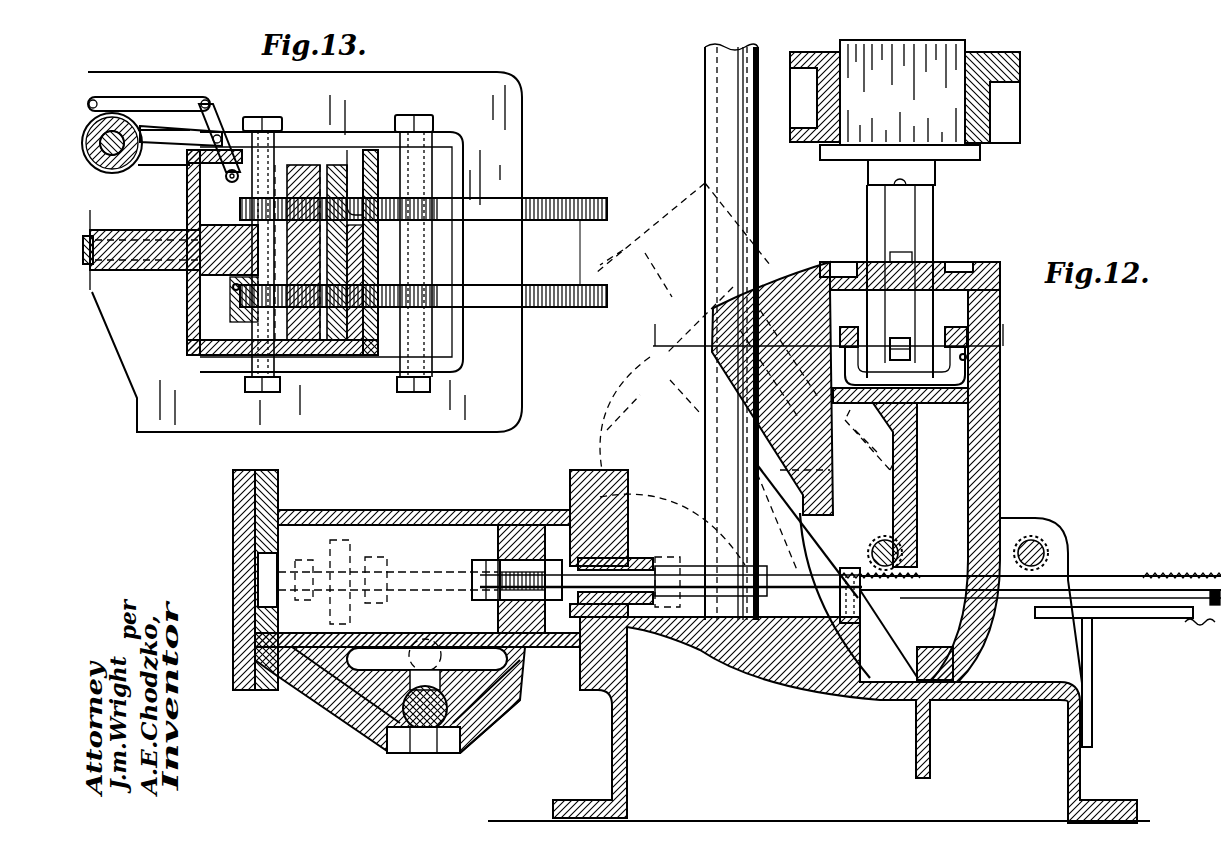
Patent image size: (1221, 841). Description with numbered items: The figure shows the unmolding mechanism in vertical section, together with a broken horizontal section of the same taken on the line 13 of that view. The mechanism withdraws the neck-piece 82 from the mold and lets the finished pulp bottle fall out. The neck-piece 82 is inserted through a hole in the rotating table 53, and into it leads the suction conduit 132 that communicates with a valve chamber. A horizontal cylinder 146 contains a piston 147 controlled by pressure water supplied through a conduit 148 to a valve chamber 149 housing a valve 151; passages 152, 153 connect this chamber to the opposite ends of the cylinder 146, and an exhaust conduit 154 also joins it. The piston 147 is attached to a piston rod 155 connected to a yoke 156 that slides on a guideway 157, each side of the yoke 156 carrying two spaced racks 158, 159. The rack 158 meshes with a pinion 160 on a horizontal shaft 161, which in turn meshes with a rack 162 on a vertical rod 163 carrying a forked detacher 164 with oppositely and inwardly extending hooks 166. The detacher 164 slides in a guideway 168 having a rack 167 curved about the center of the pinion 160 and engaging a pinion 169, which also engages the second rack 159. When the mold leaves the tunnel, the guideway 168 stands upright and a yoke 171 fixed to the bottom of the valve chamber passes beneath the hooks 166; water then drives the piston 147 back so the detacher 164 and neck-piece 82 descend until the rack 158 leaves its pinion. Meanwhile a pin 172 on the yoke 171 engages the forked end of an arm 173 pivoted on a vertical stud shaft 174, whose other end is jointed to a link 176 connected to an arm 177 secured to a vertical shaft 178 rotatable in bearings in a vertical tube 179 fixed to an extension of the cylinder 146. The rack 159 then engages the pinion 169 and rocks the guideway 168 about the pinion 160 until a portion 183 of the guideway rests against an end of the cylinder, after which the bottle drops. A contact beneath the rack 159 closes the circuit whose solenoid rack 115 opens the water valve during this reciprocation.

In FIG. 12, the section line 13- 13 is at (824, 336).
In FIG. 12, the table 53 is at (1015, 56).
In FIG. 12, the neck-piece 82 is at (902, 92).
In FIG. 12, the rack 115 is at (1155, 620).
In FIG. 12, the suction conduit 132 is at (900, 281).
In FIG. 12, the horizontal cylinder 146 is at (406, 580).
In FIG. 12, the piston 147 is at (498, 550).
In FIG. 12, the conduit 148 is at (438, 664).
In FIG. 12, the valve chamber 149 is at (462, 737).
In FIG. 12, the valve 151 is at (392, 737).
In FIG. 12, the passage 152 is at (523, 677).
In FIG. 12, the passage 153 is at (332, 680).
In FIG. 12, the exhaust conduit 154 is at (425, 753).
In FIG. 12, the piston rod 155 is at (671, 568).
In FIG. 12, the yoke 156 is at (843, 600).
In FIG. 12, the guideway 157 is at (698, 630).
In FIG. 13, the rack 158 is at (323, 177).
In FIG. 12, the rack 158 is at (898, 588).
In FIG. 13, the rack 159 is at (568, 284).
In FIG. 12, the rack 159 is at (1178, 570).
In FIG. 13, the pinion 160 is at (170, 279).
In FIG. 12, the pinion 160 is at (830, 552).
In FIG. 12, the horizontal shaft 161 is at (908, 544).
In FIG. 12, the rack 162 is at (898, 503).
In FIG. 12, the vertical rod 163 is at (908, 448).
In FIG. 13, the forked detacher 164 is at (237, 283).
In FIG. 12, the forked detacher 164 is at (921, 400).
In FIG. 12, the hooks 166 is at (950, 327).
In FIG. 12, the curved rack 167 is at (993, 626).
In FIG. 13, the guideway 168 is at (367, 350).
In FIG. 12, the guideway 168 is at (1000, 416).
In FIG. 13, the pinion 169 is at (437, 247).
In FIG. 12, the pinion 169 is at (1048, 541).
In FIG. 13, the yoke 171 is at (233, 289).
In FIG. 12, the yoke 171 is at (967, 357).
In FIG. 13, the pin 172 is at (227, 178).
In FIG. 13, the arm 173 is at (225, 128).
In FIG. 13, the vertical stud shaft 174 is at (212, 134).
In FIG. 13, the link 176 is at (176, 88).
In FIG. 13, the arm 177 is at (108, 106).
In FIG. 13, the vertical shaft 178 is at (107, 172).
In FIG. 13, the vertical tube 179 is at (137, 160).
In FIG. 12, the vertical tube 179 is at (705, 432).
In FIG. 12, the portion of guideway 183 is at (718, 318).